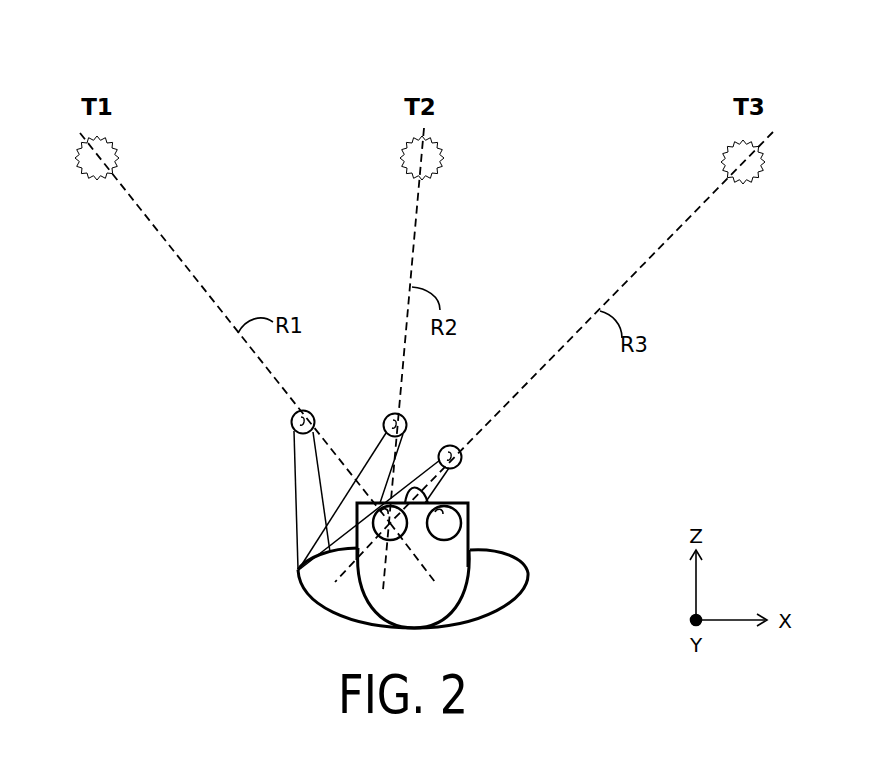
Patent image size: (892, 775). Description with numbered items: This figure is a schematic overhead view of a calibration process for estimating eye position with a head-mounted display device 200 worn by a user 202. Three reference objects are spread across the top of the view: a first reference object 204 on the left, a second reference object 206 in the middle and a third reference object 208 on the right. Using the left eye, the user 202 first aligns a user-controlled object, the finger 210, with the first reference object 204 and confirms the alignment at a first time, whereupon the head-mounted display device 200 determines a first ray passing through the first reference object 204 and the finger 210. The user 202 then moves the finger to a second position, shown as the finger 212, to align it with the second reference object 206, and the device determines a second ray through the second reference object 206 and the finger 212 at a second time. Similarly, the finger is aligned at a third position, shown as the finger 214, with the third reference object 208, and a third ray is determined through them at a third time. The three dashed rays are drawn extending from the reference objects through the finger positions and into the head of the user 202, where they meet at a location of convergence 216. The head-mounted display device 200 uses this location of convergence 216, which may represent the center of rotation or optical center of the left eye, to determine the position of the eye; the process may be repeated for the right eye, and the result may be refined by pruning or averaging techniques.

The head-mounted display device 200 is at (470, 508).
The user 202 is at (529, 573).
The first reference object 204 is at (120, 158).
The second reference object 206 is at (445, 158).
The third reference object 208 is at (768, 162).
The finger 210 is at (292, 421).
The finger at second position 212 is at (388, 415).
The finger at third position 214 is at (446, 446).
The location of convergence 216 is at (393, 530).